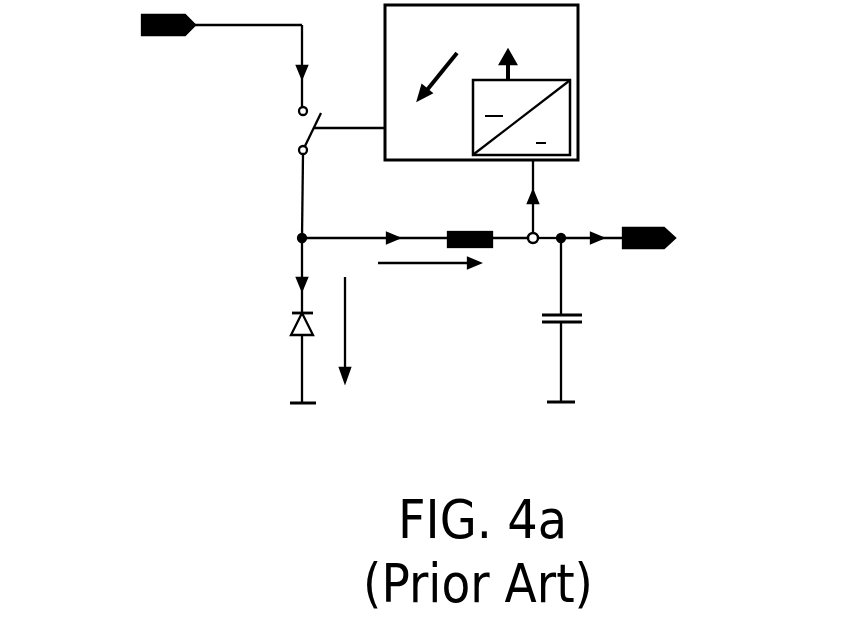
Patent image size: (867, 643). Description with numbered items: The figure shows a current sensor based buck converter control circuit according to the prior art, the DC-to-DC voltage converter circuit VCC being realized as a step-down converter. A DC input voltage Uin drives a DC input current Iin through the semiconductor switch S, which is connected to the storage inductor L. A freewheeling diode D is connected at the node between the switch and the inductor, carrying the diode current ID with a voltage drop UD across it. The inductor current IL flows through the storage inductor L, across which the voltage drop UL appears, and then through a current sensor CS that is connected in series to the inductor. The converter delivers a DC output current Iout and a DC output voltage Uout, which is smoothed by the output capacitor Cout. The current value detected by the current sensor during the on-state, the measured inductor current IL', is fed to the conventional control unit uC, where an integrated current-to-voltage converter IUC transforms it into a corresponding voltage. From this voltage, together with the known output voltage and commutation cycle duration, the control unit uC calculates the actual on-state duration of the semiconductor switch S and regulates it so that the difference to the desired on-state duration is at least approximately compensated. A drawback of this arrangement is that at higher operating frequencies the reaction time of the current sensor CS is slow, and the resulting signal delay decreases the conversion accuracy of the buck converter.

The DC input voltage Uin is at (207, 28).
The DC input current Iin is at (288, 66).
The semiconductor switch S is at (327, 135).
The diode current ID is at (288, 275).
The freewheeling diode D is at (291, 358).
The voltage drop across freewheeling diode UD is at (362, 329).
The inductor current IL is at (375, 218).
The storage inductor L is at (488, 227).
The voltage drop across storage inductor UL is at (429, 279).
The current sensor CS is at (530, 245).
The measured inductor current IL' is at (558, 208).
The DC output current Iout is at (592, 254).
The DC output voltage Uout is at (673, 239).
The output capacitor Cout is at (586, 320).
The DC-to-DC voltage converter circuit VCC is at (463, 362).
The control unit uC is at (563, 42).
The current-to-voltage converter IUC is at (565, 112).